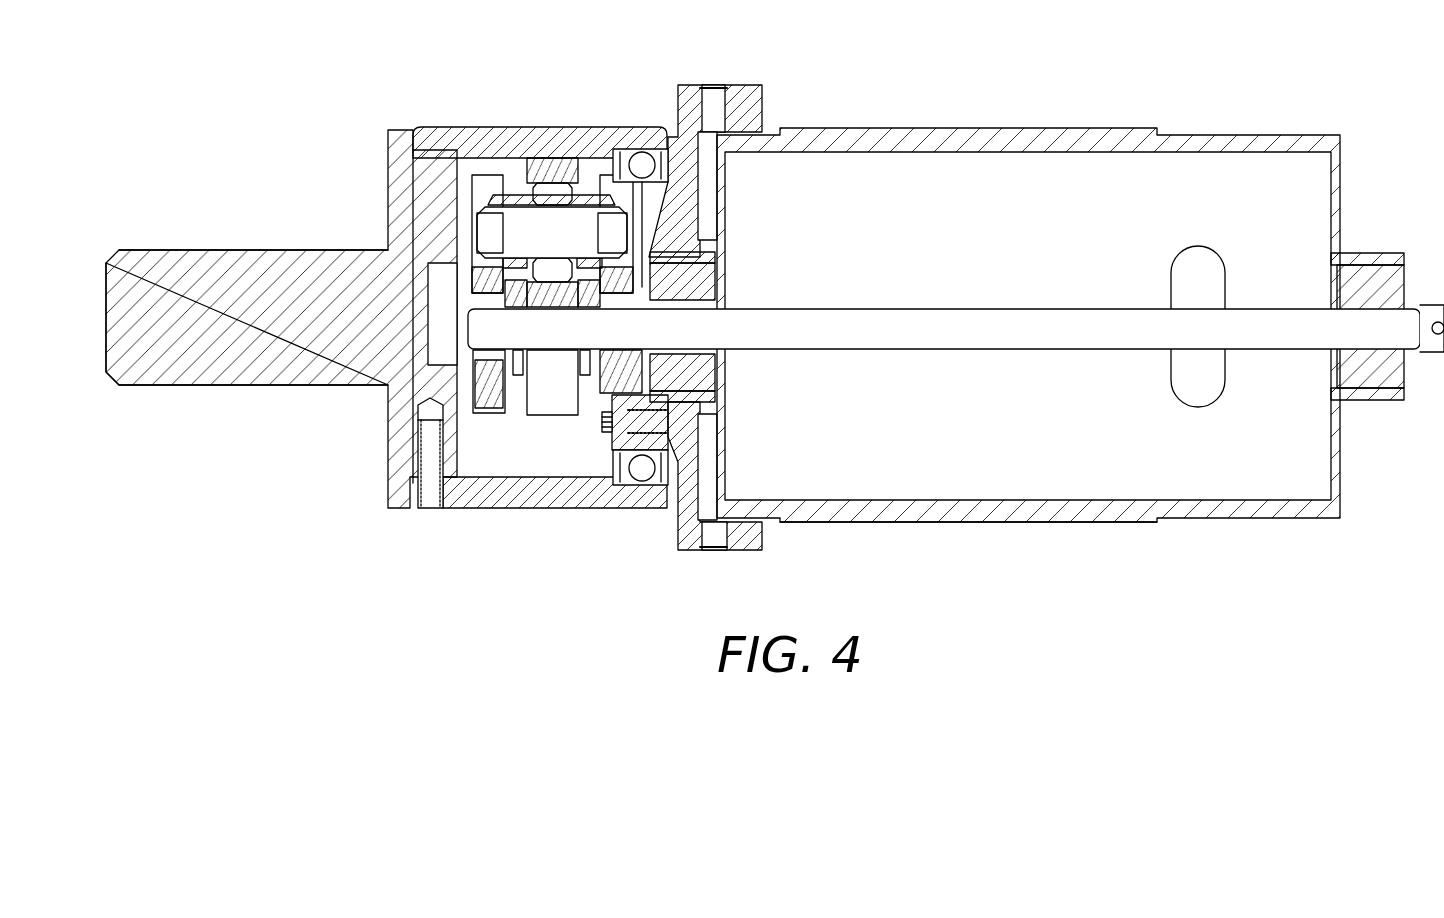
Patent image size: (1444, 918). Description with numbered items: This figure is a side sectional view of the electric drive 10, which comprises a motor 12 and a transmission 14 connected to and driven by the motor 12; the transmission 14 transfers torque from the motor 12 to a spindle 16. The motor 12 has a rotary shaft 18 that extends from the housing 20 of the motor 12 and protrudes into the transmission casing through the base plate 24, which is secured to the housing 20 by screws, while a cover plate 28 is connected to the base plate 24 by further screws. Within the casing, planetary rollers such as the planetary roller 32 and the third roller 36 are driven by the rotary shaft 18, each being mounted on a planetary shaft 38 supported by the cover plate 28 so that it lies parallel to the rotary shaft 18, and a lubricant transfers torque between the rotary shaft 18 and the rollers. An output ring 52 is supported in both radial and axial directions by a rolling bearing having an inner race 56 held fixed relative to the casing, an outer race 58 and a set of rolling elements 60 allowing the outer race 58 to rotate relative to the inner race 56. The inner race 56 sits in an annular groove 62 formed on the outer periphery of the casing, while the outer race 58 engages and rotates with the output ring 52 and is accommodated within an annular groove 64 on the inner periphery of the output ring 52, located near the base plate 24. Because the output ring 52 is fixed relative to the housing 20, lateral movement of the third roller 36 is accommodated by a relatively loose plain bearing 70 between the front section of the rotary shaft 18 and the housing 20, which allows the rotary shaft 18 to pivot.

The electric drive 10 is at (1330, 70).
The motor 12 is at (1183, 535).
The transmission 14 is at (418, 105).
The spindle 16 is at (232, 375).
The rotary shaft 18 is at (985, 315).
The housing 20 is at (1097, 135).
The base plate 24 is at (692, 540).
The cover plate 28 is at (490, 400).
The planetary roller 32 is at (549, 165).
The planetary roller 36 is at (555, 405).
The planetary shaft 38 is at (518, 233).
The output ring 52 is at (473, 135).
The inner race 56 is at (666, 455).
The outer race 58 is at (620, 485).
The rolling elements 60 is at (643, 470).
The annular groove 62 is at (660, 185).
The annular groove 64 is at (660, 150).
The plain bearing 70 is at (710, 375).